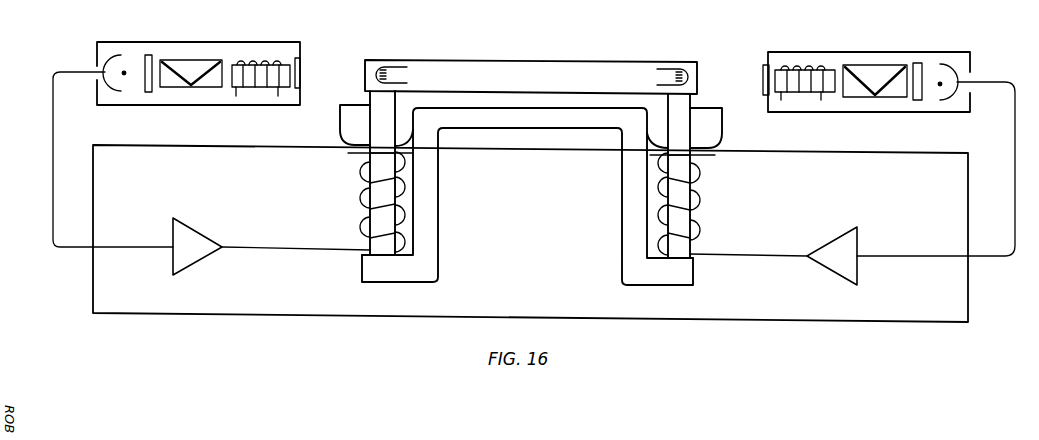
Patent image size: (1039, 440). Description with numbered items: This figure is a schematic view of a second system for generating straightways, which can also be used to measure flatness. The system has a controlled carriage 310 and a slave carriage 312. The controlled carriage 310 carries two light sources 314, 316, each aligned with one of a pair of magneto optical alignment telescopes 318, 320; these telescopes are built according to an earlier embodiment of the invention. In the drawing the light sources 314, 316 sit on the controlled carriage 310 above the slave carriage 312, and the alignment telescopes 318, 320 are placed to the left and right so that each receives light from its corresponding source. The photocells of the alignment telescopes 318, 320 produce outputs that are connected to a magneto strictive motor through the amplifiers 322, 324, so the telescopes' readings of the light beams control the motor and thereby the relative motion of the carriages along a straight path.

The controlled carriage 310 is at (543, 62).
The slave carriage 312 is at (706, 108).
The light source 314 is at (364, 74).
The light source 316 is at (698, 75).
The magneto optical alignment telescope 318 is at (200, 40).
The magneto optical alignment telescope 320 is at (857, 49).
The amplifier 322 is at (197, 234).
The amplifier 324 is at (824, 244).